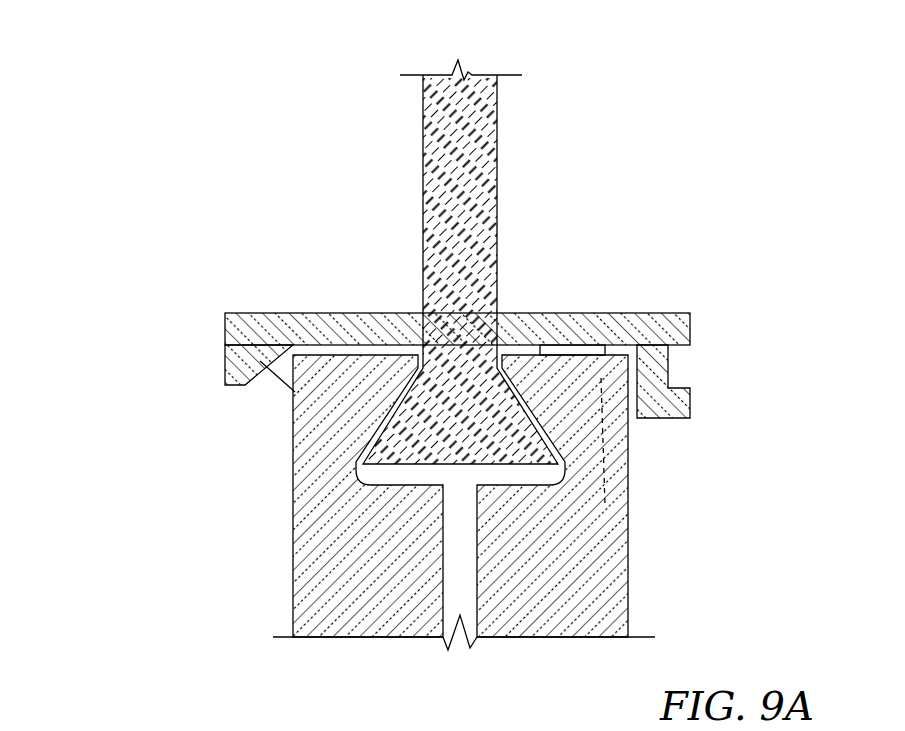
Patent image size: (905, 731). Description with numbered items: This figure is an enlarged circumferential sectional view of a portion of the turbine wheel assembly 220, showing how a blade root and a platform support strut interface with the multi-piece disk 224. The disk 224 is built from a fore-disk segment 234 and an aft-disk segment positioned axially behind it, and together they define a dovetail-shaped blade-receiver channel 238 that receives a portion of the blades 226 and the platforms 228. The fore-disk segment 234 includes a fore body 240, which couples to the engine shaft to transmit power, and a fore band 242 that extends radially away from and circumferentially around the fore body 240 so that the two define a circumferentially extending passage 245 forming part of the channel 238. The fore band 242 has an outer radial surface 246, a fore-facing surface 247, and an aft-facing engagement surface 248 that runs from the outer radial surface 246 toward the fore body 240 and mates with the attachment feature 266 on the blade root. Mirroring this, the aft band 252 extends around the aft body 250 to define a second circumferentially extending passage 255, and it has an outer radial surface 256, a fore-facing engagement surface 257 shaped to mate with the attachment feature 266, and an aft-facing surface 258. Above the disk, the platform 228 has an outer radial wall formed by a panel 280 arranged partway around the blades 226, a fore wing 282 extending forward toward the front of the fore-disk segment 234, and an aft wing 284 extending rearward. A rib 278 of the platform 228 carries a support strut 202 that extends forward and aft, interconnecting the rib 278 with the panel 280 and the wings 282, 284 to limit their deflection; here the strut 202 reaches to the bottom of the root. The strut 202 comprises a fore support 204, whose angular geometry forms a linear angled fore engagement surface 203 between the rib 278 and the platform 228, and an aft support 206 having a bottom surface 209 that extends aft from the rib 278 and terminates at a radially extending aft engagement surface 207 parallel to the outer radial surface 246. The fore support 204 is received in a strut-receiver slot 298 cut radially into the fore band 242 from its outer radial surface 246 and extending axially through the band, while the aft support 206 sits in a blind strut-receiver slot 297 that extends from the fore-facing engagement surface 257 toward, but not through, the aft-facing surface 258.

The turbine wheel assembly 220 is at (657, 123).
The multi-piece disk 224 is at (720, 606).
The blades 226 is at (498, 73).
The platform 228 is at (641, 310).
The fore-disk segment 234 is at (221, 557).
The blade-receiver channel 238 is at (540, 432).
The fore body 240 is at (276, 604).
The fore band 242 is at (152, 502).
The circumferentially extending passage 245 is at (405, 486).
The outer radial surface 246 is at (388, 354).
The fore-facing surface 247 is at (395, 418).
The aft-facing engagement surface 248 is at (416, 423).
The aft body 250 is at (636, 580).
The aft band 252 is at (727, 458).
The circumferentially extending passage 255 is at (505, 486).
The outer radial surface 256 is at (578, 347).
The fore-facing engagement surface 257 is at (500, 432).
The aft-facing surface 258 is at (629, 497).
The attachment feature 266 is at (356, 448).
The rib 278 is at (504, 346).
The panel 280 is at (413, 311).
The fore wing 282 is at (244, 311).
The aft wing 284 is at (686, 310).
The strut-receiver slot 297 is at (571, 468).
The strut-receiver slot 298 is at (229, 384).
The support strut 202 is at (260, 361).
The fore engagement surface 203 is at (405, 395).
The fore support 204 is at (262, 357).
The aft support 206 is at (545, 352).
The aft engagement surface 207 is at (642, 419).
The bottom surface 209 is at (630, 513).